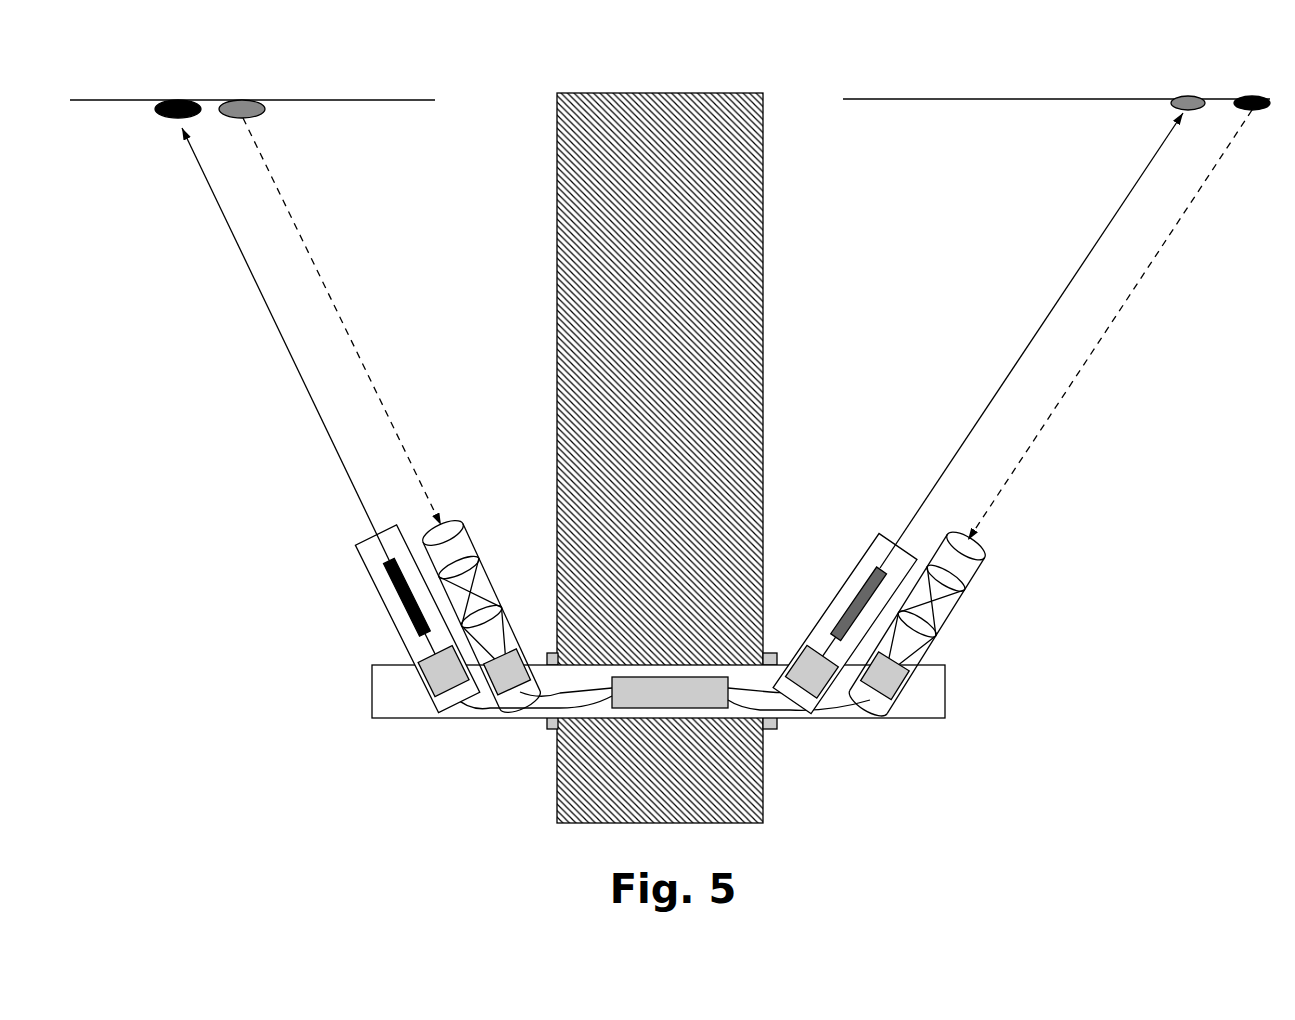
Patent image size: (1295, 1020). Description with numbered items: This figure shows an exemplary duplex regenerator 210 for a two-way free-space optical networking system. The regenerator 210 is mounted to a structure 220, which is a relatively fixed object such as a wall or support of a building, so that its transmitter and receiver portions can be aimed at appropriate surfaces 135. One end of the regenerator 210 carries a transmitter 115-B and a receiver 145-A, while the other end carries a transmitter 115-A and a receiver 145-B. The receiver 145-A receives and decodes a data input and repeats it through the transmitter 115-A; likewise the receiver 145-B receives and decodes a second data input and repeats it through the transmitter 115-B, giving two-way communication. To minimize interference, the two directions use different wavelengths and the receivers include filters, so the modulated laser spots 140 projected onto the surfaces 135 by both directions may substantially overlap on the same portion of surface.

The surface 135 is at (365, 100).
The modulated laser spot 140 is at (165, 130).
The structure 220 is at (687, 93).
The regenerator 210 is at (353, 680).
The transmitter 115-B is at (430, 730).
The receiver 145-A is at (505, 732).
The transmitter 115-A is at (817, 728).
The receiver 145-B is at (897, 728).